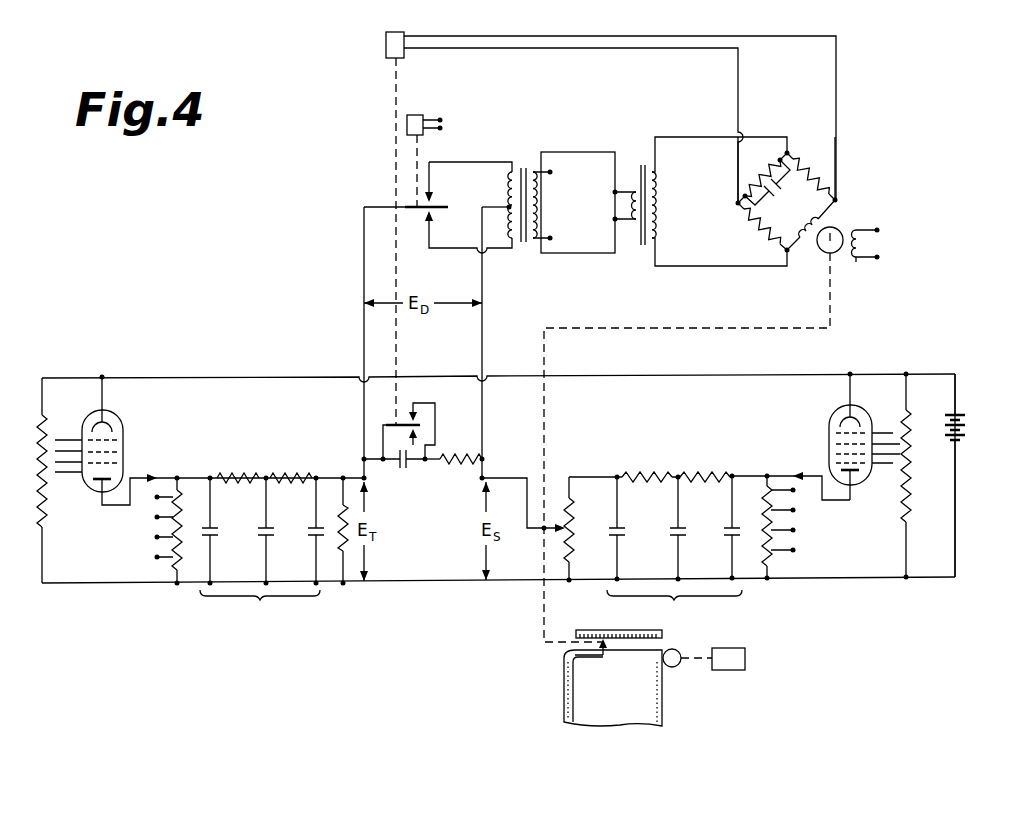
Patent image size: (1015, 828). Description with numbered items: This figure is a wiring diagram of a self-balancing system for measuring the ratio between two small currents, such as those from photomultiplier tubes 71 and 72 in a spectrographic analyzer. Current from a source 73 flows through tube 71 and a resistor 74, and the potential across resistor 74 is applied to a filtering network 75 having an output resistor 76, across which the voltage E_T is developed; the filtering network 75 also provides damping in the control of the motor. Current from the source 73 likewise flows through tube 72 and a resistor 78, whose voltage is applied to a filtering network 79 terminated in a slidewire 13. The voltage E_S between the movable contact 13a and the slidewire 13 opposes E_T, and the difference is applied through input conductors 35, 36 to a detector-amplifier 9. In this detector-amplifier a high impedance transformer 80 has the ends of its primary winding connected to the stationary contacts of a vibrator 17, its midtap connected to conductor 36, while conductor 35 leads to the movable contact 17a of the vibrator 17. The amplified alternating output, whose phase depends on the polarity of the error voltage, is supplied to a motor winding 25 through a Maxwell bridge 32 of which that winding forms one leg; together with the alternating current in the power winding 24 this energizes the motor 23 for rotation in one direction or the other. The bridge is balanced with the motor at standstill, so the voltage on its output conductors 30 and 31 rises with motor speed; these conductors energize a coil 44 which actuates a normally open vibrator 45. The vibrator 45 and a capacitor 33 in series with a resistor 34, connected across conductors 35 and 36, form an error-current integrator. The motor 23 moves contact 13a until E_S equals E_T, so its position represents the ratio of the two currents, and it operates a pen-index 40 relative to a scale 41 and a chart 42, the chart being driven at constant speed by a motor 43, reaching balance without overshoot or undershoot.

The detector-amplifier 9 is at (581, 152).
The slidewire 13 is at (577, 540).
The movable contact 13a is at (541, 534).
The vibrator 17 is at (414, 153).
The movable contact 17a is at (432, 209).
The motor 23 is at (820, 249).
The power winding 24 is at (857, 262).
The motor winding 25 is at (820, 223).
The output conductor 30 is at (606, 49).
The output conductor 31 is at (549, 36).
The Maxwell bridge 32 is at (799, 219).
The capacitor 33 is at (405, 470).
The resistor 34 is at (462, 466).
The input conductor 35 is at (364, 432).
The input conductor 36 is at (483, 430).
The pen-index 40 is at (604, 649).
The scale 41 is at (608, 631).
The chart 42 is at (624, 718).
The motor 43 is at (745, 654).
The coil 44 is at (386, 46).
The vibrator 45 is at (393, 424).
The photomultiplier tube 71 is at (123, 432).
The photomultiplier tube 72 is at (829, 430).
The source 73 is at (968, 433).
The resistor 74 is at (171, 541).
The filtering network 75 is at (262, 548).
The output resistor 76 is at (340, 525).
The resistor 78 is at (796, 548).
The filtering network 79 is at (674, 547).
The high impedance transformer 80 is at (521, 168).